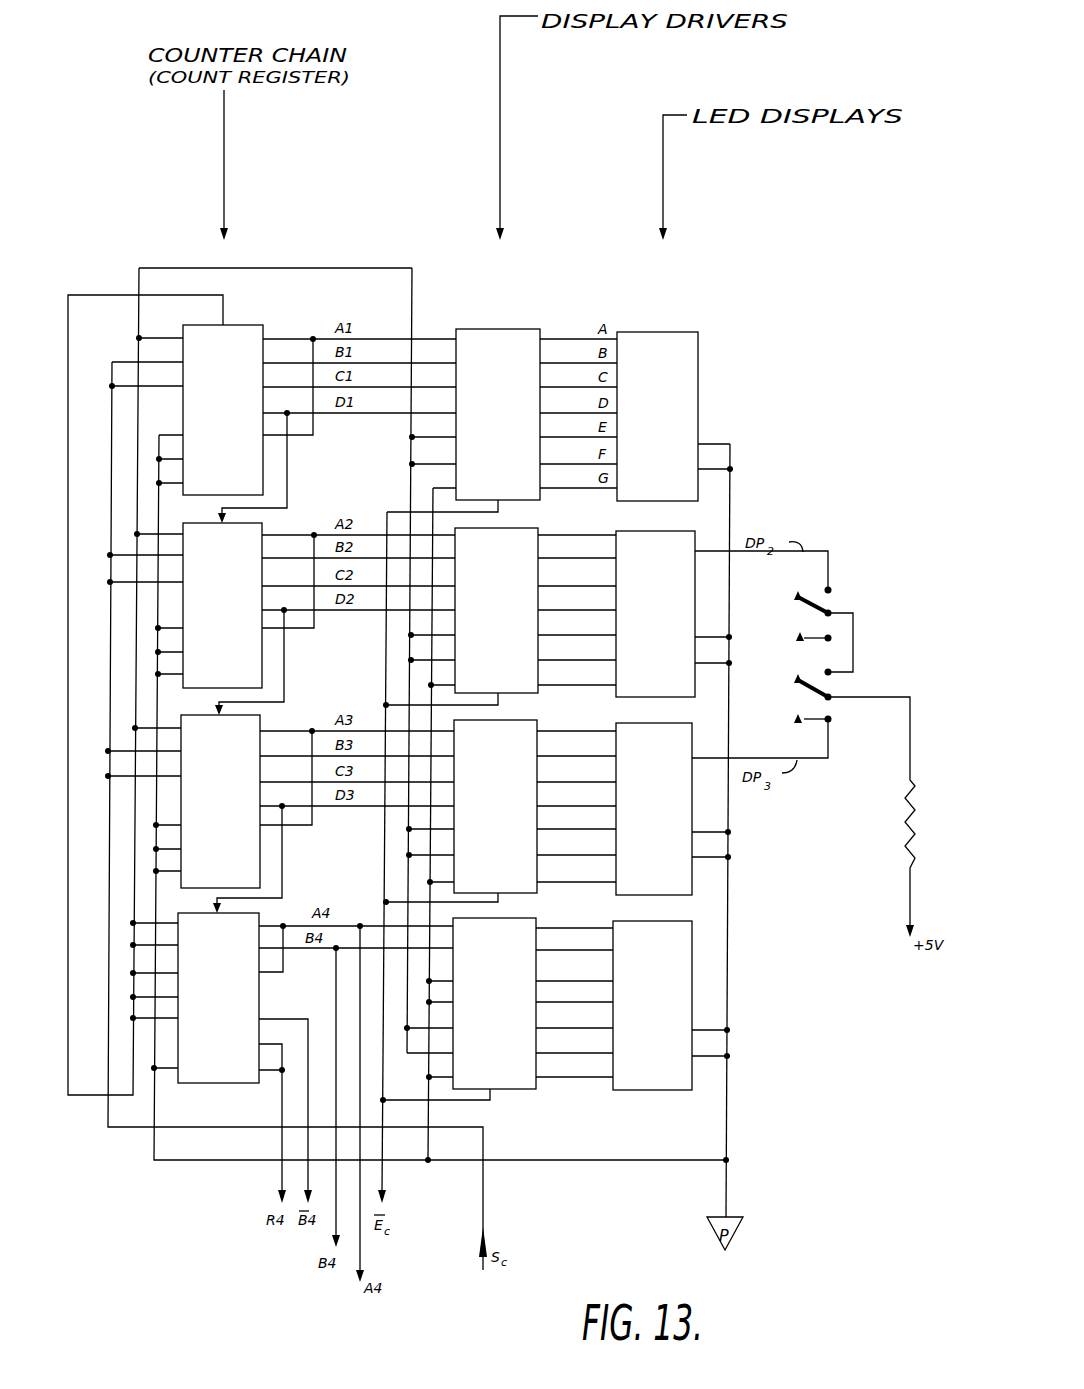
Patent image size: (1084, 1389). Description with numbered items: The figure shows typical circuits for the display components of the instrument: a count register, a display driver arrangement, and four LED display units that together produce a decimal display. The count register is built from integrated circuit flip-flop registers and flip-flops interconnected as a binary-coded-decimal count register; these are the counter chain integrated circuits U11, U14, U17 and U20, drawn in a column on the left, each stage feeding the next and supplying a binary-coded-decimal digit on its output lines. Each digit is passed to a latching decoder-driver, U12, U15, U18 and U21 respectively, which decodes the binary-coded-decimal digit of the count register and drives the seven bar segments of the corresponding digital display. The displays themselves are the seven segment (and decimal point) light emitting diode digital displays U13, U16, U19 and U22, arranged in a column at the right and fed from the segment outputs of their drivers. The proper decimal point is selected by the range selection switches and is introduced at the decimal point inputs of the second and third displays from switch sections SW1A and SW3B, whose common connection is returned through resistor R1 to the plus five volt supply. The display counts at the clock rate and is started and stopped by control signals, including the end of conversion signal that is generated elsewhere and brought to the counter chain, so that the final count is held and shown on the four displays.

The count register integrated circuit U11 is at (186, 410).
The display driver latching decoder-driver U12 is at (463, 420).
The LED digital display U13 is at (675, 416).
The count register integrated circuit U14 is at (184, 605).
The display driver latching decoder-driver U15 is at (460, 618).
The LED digital display U16 is at (674, 613).
The count register integrated circuit U17 is at (182, 801).
The display driver latching decoder-driver U18 is at (460, 812).
The LED digital display U19 is at (673, 809).
The count register flip-flop integrated circuit U20 is at (194, 998).
The display driver latching decoder-driver U21 is at (458, 1010).
The LED digital display U22 is at (671, 1005).
The range selection switch SW1A is at (794, 614).
The range selection switch SW3B is at (794, 696).
The resistor R1 is at (871, 817).